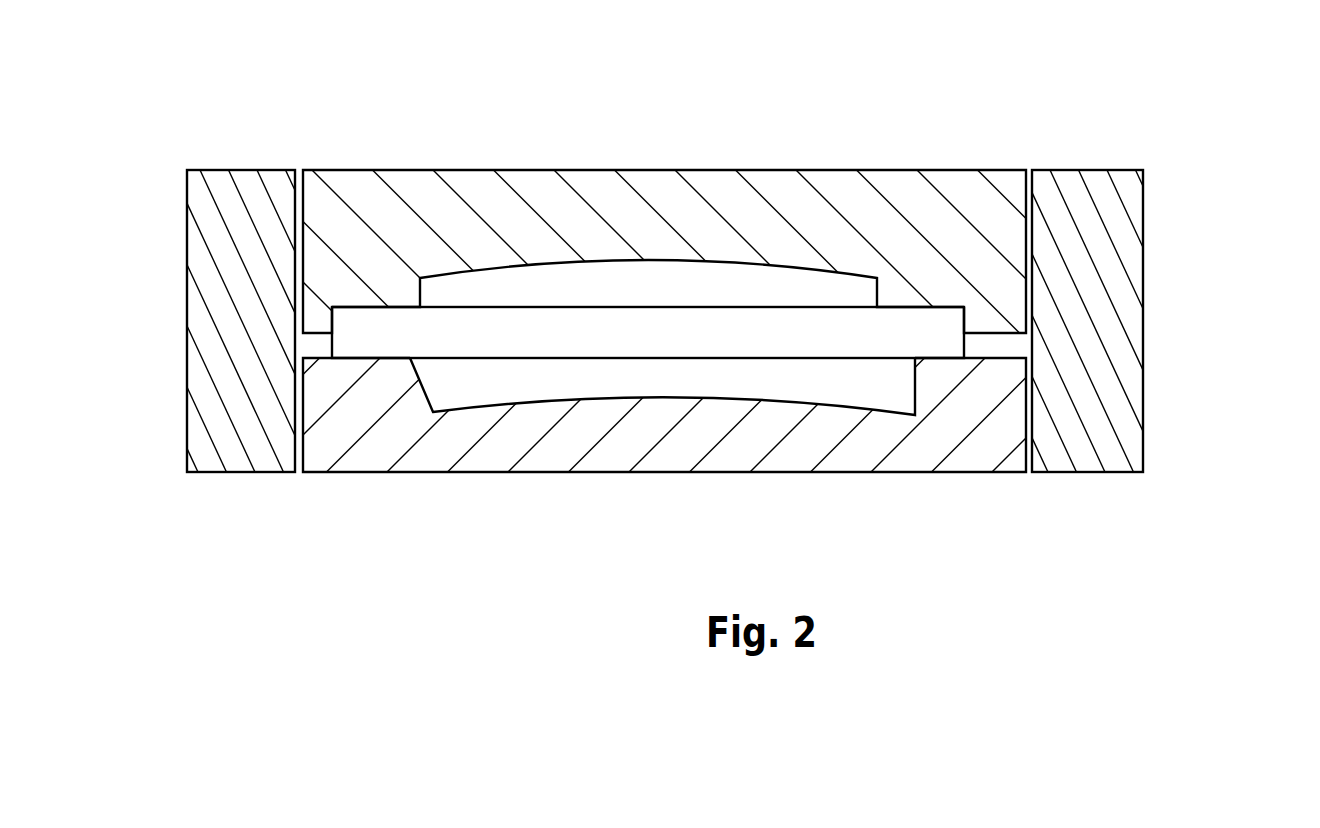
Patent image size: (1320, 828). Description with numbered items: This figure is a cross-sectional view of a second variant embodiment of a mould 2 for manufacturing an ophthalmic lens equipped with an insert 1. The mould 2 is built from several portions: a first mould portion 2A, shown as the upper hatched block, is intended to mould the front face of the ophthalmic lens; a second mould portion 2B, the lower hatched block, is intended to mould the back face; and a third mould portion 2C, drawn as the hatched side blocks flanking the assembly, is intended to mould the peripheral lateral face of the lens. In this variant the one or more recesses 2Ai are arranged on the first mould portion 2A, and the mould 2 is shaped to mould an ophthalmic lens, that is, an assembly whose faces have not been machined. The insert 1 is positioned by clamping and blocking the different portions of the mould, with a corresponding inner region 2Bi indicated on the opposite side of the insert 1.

The insert 1 is at (522, 318).
The mould 2 is at (673, 327).
The first mould portion 2A is at (648, 224).
The recess 2Ai is at (344, 307).
The second mould portion 2B is at (656, 341).
The inner surface of lower mold half 2Bi is at (898, 307).
The third mould portion 2C is at (240, 293).